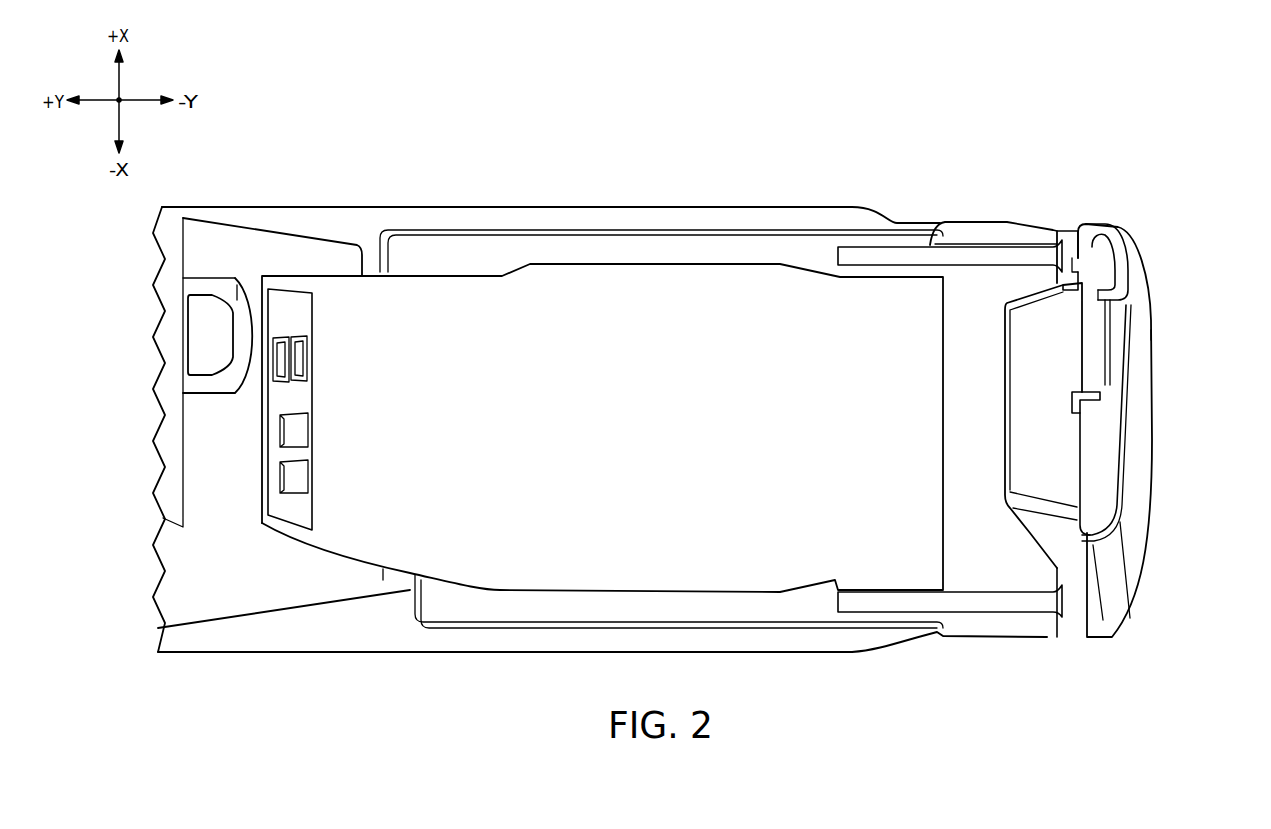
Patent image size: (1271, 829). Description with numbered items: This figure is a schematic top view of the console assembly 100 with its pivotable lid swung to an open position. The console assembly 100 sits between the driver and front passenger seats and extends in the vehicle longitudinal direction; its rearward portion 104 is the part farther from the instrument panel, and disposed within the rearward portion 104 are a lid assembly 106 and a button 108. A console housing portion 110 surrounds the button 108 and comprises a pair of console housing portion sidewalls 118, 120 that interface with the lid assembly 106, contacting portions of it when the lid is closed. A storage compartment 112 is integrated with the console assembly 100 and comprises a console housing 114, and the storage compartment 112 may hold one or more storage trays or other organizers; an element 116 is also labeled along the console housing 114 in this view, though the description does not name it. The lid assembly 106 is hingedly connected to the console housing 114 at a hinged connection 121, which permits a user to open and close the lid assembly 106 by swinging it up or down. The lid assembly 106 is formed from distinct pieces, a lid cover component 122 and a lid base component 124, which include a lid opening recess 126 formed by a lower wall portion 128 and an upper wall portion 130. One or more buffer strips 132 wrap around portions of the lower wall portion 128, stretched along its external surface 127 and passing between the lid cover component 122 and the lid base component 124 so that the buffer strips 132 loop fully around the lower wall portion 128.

The console assembly 100 is at (955, 116).
The rearward portion 104 is at (423, 158).
The lid assembly 106 is at (1162, 555).
The button 108 is at (200, 332).
The console housing portion 110 is at (237, 290).
The storage compartment 112 is at (355, 536).
The console housing 114 is at (405, 564).
The upper rail 116 is at (642, 278).
The console housing portion sidewall 118 is at (220, 277).
The console housing portion sidewall 120 is at (205, 394).
The hinged connection 121 is at (932, 646).
The lid cover component 122 is at (1130, 257).
The lid base component 124 is at (1088, 242).
The lid opening recess 126 is at (1162, 333).
The external surface 127 is at (1107, 303).
The lower wall portion 128 is at (1088, 408).
The upper wall portion 130 is at (1113, 397).
The buffer strips 132 is at (1073, 286).